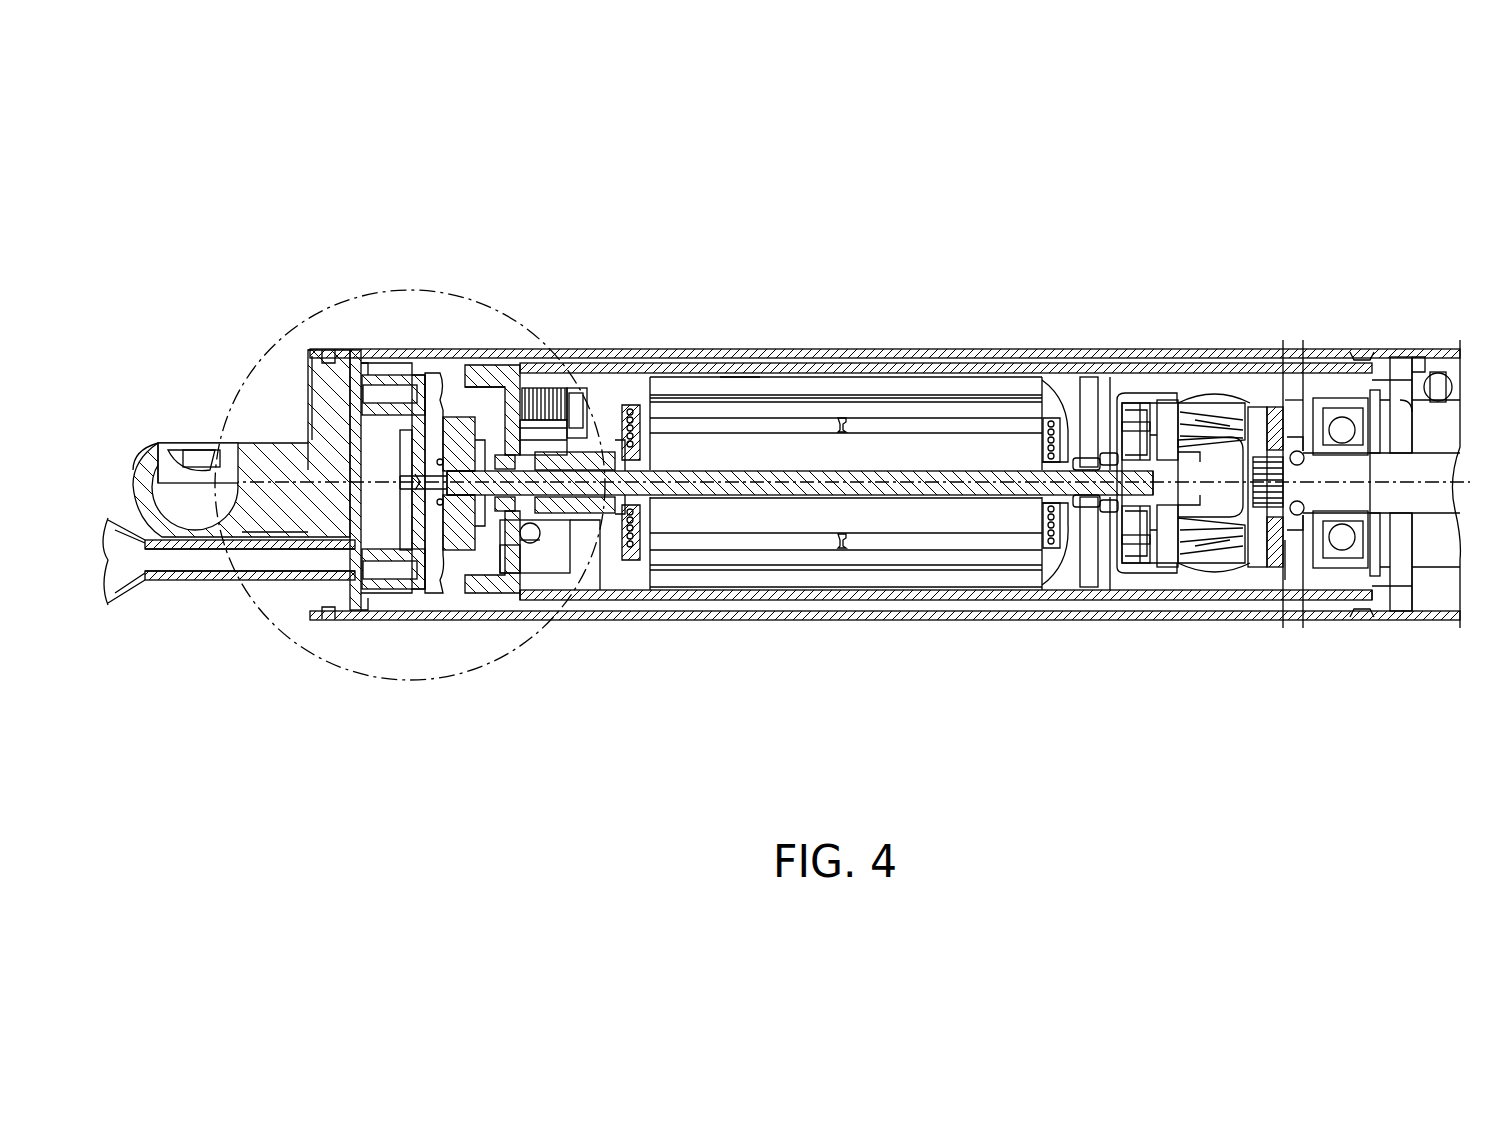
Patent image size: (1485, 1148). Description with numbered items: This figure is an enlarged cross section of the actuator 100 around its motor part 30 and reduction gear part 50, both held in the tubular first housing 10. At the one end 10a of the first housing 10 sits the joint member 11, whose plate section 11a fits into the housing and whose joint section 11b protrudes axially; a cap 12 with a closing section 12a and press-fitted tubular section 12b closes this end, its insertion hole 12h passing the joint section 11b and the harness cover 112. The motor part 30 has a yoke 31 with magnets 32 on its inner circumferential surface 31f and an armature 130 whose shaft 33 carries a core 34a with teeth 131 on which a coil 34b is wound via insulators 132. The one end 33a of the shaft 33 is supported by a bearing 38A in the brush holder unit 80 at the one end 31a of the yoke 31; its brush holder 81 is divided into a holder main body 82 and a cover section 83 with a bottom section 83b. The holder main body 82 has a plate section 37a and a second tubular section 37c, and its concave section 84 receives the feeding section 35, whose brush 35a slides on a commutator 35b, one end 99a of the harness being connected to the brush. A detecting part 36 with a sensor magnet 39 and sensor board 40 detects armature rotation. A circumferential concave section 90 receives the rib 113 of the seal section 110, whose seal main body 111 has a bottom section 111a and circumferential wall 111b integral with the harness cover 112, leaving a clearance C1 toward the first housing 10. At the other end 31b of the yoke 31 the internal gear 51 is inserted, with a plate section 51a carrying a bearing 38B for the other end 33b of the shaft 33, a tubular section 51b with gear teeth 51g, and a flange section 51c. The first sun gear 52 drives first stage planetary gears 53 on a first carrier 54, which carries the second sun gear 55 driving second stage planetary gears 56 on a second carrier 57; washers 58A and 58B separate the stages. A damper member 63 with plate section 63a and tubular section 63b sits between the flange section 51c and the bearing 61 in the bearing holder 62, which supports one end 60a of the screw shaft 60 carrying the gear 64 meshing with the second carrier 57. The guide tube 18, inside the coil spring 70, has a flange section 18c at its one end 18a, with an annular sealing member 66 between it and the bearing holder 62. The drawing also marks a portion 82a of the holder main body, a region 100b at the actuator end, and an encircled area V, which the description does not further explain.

The first housing 10 is at (872, 622).
The one end of first housing 10a is at (330, 615).
The joint member 11 is at (175, 440).
The plate section 11a is at (340, 390).
The joint section 11b is at (138, 537).
The cap 12 is at (330, 350).
The closing section 12a is at (305, 352).
The tubular section 12b is at (315, 358).
The insertion hole 12h is at (220, 452).
The guide tube 18 is at (1425, 520).
The one end of guide tube 18a is at (1420, 357).
The flange section 18c is at (1415, 400).
The motor part 30 is at (895, 345).
The yoke 31 is at (808, 366).
The one end of yoke 31a is at (520, 603).
The other end of yoke 31b is at (1295, 603).
The inner circumferential surface 31f is at (765, 376).
The magnets 32 is at (866, 395).
The shaft 33 is at (950, 498).
The one end of shaft 33a is at (470, 500).
The other end of shaft 33b is at (1150, 498).
The core 34a is at (810, 540).
The coil 34b is at (1048, 420).
The feeding section 35 is at (575, 450).
The brush 35a is at (618, 445).
The commutator 35b is at (622, 518).
The detecting part 36 is at (372, 588).
The plate section 37a is at (510, 515).
The second tubular section 37c is at (478, 530).
The bearing 38A is at (455, 552).
The bearing 38B is at (1112, 395).
The sensor magnet 39 is at (455, 420).
The sensor board 40 is at (420, 590).
The reduction gear part 50 is at (1240, 278).
The internal gear 51 is at (1175, 398).
The plate section 51a is at (1122, 432).
The tubular section 51b is at (1152, 436).
The flange section 51c is at (1285, 575).
The gear teeth 51g is at (1145, 415).
The first sun gear 52 is at (1188, 530).
The first stage planetary gear 53 is at (1135, 410).
The first carrier 54 is at (1205, 425).
The second sun gear 55 is at (1220, 520).
The second stage planetary gear 56 is at (1172, 410).
The second carrier 57 is at (1272, 570).
The washer 58A is at (1200, 570).
The washer 58B is at (1200, 392).
The screw shaft 60 is at (1435, 580).
The one end of screw shaft 60a is at (1385, 570).
The bearing 61 is at (1345, 400).
The bearing holder 62 is at (1373, 395).
The damper member 63 is at (1290, 400).
The plate section 63a is at (1305, 400).
The tubular section 63b is at (1287, 395).
The gear 64 is at (1272, 508).
The sealing member 66 is at (1398, 360).
The coil spring 70 is at (1440, 375).
The brush holder unit 80 is at (508, 355).
The brush holder 81 is at (468, 195).
The holder main body 82 is at (545, 395).
The coil portion 82a is at (575, 395).
The cover section 83 is at (385, 363).
The bottom section 83b is at (340, 335).
The concave section 84 is at (600, 565).
The concave section 90 is at (434, 373).
The one end of harness 99a is at (540, 545).
The actuator 100 is at (1210, 215).
The actuator end 100b is at (108, 530).
The seal section 110 is at (320, 455).
The seal main body 111 is at (352, 355).
The bottom section 111a is at (295, 440).
The circumferential wall 111b is at (365, 362).
The harness cover 112 is at (205, 582).
The rib 113 is at (372, 612).
The armature 130 is at (1010, 380).
The teeth 131 is at (1089, 400).
The insulators 132 is at (1105, 512).
The clearance C1 is at (710, 362).
The view circle V is at (510, 290).